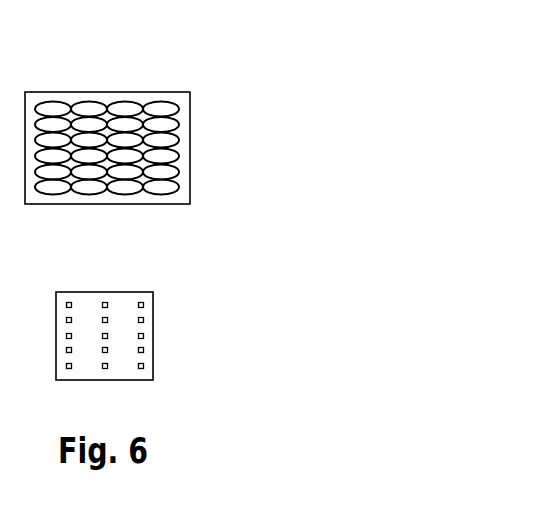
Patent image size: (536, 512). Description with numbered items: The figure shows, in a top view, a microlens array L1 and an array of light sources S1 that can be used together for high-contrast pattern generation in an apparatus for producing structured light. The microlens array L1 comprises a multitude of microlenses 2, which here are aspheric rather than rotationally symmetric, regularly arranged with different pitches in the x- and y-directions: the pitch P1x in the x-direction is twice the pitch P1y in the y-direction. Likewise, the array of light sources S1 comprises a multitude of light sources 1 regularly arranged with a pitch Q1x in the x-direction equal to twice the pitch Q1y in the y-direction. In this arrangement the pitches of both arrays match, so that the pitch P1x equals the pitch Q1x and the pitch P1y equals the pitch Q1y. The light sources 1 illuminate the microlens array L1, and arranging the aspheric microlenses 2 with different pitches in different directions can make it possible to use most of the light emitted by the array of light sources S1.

The light source 1 is at (66, 336).
The microlens 2 is at (176, 124).
The microlens array L1 is at (197, 60).
The array of light sources S1 is at (175, 285).
The microlens pitch in x-direction P1x is at (118, 79).
The microlens pitch in y-direction P1y is at (172, 171).
The light source pitch in x-direction Q1x is at (132, 272).
The light source pitch in y-direction Q1y is at (141, 350).